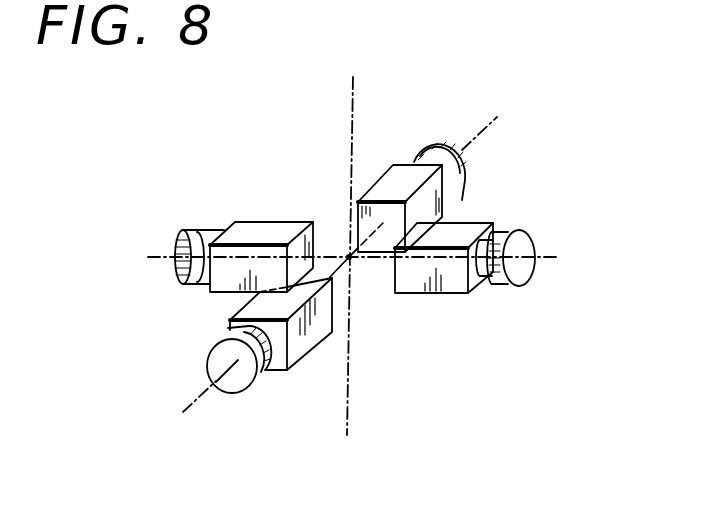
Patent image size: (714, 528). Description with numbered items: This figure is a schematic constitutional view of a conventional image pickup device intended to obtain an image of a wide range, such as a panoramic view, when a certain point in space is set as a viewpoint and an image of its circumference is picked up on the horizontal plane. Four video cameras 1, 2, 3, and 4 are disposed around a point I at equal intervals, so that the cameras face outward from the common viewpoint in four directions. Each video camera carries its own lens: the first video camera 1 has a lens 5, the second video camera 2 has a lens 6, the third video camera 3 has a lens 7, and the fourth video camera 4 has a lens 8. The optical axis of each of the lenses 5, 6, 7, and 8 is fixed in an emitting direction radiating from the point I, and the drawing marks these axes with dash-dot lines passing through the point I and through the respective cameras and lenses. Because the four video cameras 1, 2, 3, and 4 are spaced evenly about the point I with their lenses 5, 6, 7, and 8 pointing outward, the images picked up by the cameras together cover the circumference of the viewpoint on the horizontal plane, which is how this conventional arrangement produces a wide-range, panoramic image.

The video camera 1 is at (277, 230).
The video camera 2 is at (396, 186).
The video camera 3 is at (462, 234).
The video camera 4 is at (260, 305).
The lens 5 is at (190, 232).
The lens 6 is at (460, 171).
The lens 7 is at (520, 243).
The lens 8 is at (247, 377).
The point I is at (350, 259).